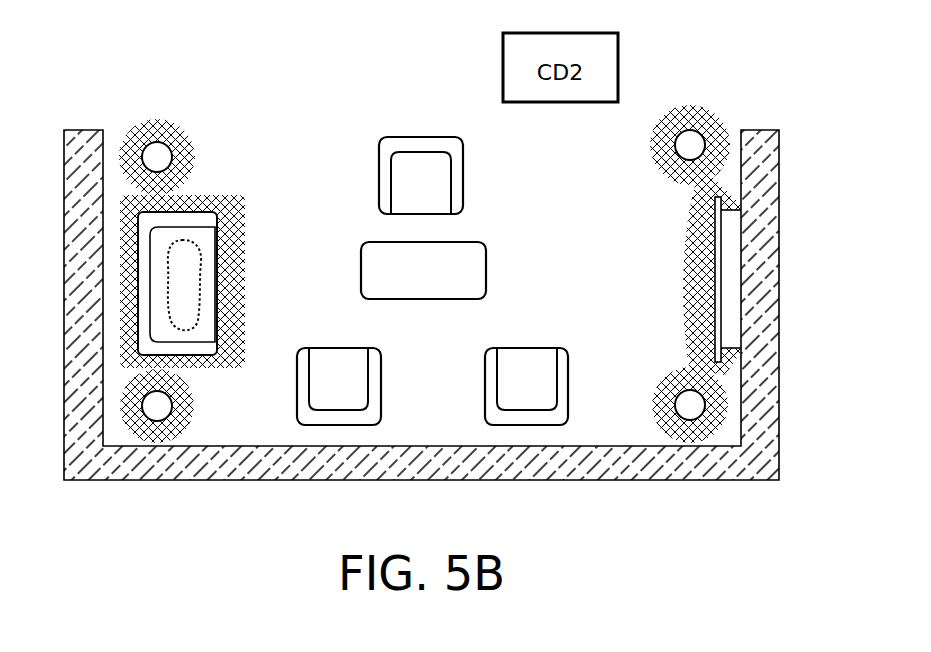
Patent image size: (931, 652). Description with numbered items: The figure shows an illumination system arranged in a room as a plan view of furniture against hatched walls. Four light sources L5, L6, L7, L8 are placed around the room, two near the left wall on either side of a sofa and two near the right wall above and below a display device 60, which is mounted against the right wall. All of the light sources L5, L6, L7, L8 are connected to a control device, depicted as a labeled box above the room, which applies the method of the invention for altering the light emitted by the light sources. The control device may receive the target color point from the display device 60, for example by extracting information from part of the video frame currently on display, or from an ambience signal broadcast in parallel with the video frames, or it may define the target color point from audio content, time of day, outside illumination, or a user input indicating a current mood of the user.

The light source L5 is at (676, 148).
The light source L6 is at (676, 407).
The light source L7 is at (163, 406).
The light source L8 is at (163, 160).
The display device 60 is at (725, 235).